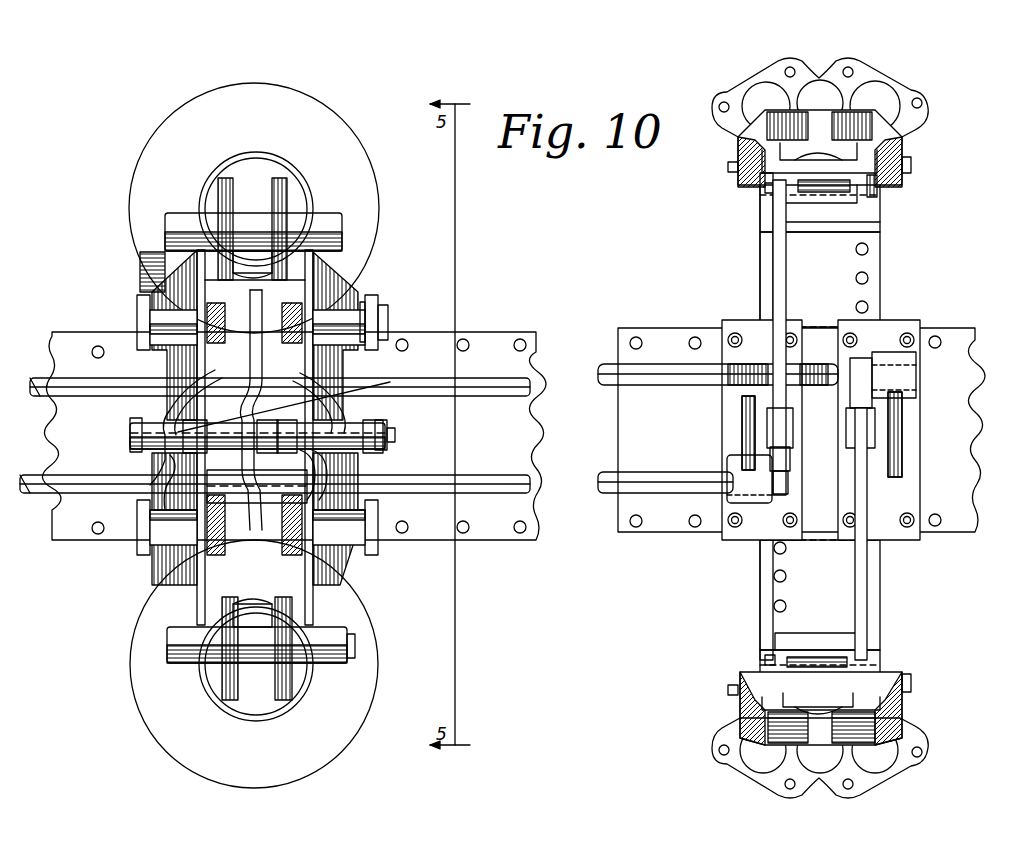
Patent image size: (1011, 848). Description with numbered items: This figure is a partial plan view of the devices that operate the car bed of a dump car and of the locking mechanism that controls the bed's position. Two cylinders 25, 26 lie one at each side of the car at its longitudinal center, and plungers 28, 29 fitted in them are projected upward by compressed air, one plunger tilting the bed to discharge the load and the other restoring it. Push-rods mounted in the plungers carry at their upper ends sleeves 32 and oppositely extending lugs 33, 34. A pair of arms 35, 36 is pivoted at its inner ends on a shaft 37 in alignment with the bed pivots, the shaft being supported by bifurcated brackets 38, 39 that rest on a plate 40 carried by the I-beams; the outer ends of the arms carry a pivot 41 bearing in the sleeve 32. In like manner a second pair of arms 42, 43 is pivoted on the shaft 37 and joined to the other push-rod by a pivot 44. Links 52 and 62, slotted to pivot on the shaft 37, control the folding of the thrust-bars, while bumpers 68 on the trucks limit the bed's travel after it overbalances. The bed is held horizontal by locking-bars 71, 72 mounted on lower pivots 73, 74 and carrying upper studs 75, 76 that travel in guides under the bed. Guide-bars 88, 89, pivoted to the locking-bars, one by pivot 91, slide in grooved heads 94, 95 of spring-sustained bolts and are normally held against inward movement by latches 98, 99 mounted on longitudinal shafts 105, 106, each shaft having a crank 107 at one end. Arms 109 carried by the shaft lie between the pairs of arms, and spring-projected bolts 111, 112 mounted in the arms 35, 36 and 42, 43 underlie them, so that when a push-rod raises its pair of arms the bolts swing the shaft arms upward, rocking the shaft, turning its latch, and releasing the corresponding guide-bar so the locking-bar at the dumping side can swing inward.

The cylinder 25 is at (140, 184).
The cylinder 26 is at (322, 765).
The plunger 28 is at (258, 718).
The plunger 29 is at (265, 154).
The sleeve 32 is at (285, 220).
The lug 33 is at (272, 190).
The lug 34 is at (252, 271).
The arm 35 is at (370, 585).
The arm 36 is at (150, 584).
The shaft 37 is at (393, 436).
The bifurcated bracket 38 is at (383, 382).
The bifurcated bracket 39 is at (168, 386).
The plate 40 is at (488, 528).
The pivot 41 is at (357, 644).
The arm 42 is at (358, 298).
The arm 43 is at (155, 289).
The pivot 44 is at (158, 242).
The link 52 is at (239, 552).
The link 62 is at (258, 302).
The bumper 68 is at (813, 83).
The locking-bar 71 is at (748, 712).
The locking-bar 72 is at (740, 150).
The pivot 73 is at (911, 688).
The pivot 74 is at (911, 165).
The stud 75 is at (775, 812).
The stud 76 is at (813, 98).
The guide-bar 88 is at (867, 500).
The guide-bar 89 is at (783, 302).
The pivot 91 is at (878, 190).
The grooved head 94 is at (882, 431).
The grooved head 95 is at (764, 433).
The latch 98 is at (792, 460).
The latch 99 is at (848, 406).
The shaft 105 is at (485, 478).
The shaft 106 is at (490, 378).
The crank 107 is at (762, 375).
The arm 109 is at (206, 313).
The spring-projected bolt 111 is at (163, 326).
The spring-projected bolt 112 is at (375, 322).